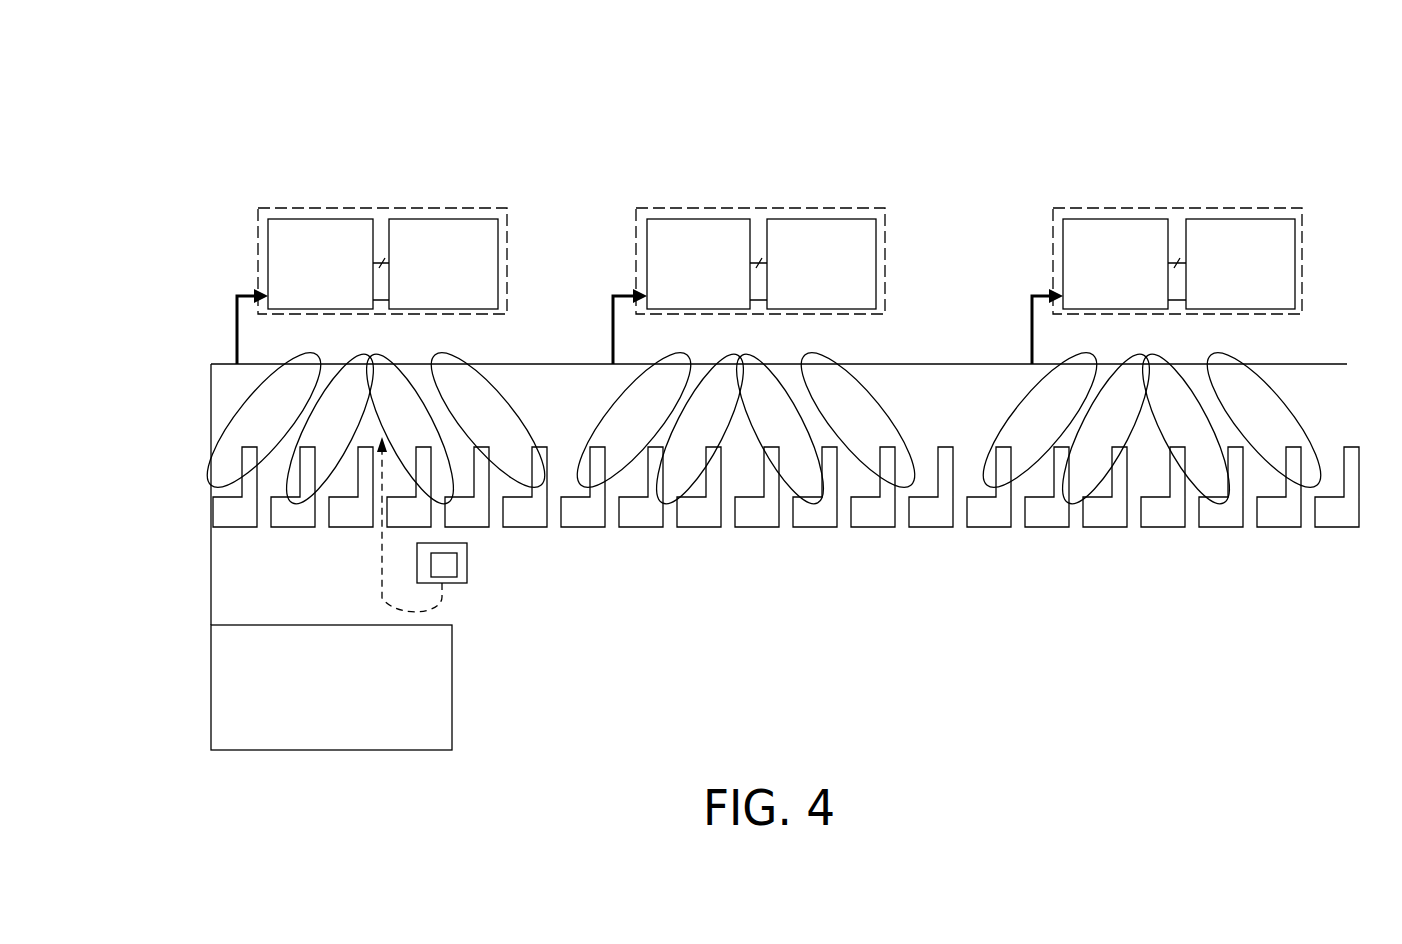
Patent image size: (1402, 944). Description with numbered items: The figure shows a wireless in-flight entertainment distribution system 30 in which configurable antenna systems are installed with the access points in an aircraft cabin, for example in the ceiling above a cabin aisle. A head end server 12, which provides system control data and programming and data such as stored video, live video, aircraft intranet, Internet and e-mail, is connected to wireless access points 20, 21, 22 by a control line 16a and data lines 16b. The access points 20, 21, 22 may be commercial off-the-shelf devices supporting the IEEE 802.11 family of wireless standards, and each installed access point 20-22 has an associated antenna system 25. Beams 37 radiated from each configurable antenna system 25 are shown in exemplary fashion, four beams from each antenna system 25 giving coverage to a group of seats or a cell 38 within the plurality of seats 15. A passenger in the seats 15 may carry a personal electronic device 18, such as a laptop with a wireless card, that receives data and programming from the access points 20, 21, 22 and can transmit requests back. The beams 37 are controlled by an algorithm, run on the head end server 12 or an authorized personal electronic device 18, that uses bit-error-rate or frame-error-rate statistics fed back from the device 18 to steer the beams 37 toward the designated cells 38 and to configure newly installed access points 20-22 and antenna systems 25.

The head end server 12 is at (452, 685).
The seats 15 is at (800, 558).
The control line 16a is at (211, 570).
The data lines 16b is at (721, 485).
The personal electronic device 18 is at (468, 562).
The wireless access point 20 is at (318, 219).
The wireless access point 21 is at (697, 219).
The wireless access point 22 is at (1116, 219).
The antenna system 25 is at (438, 219).
The wireless in-flight entertainment distribution system 30 is at (1340, 290).
The antenna beams 37 is at (1146, 460).
The cell 38 is at (1164, 482).